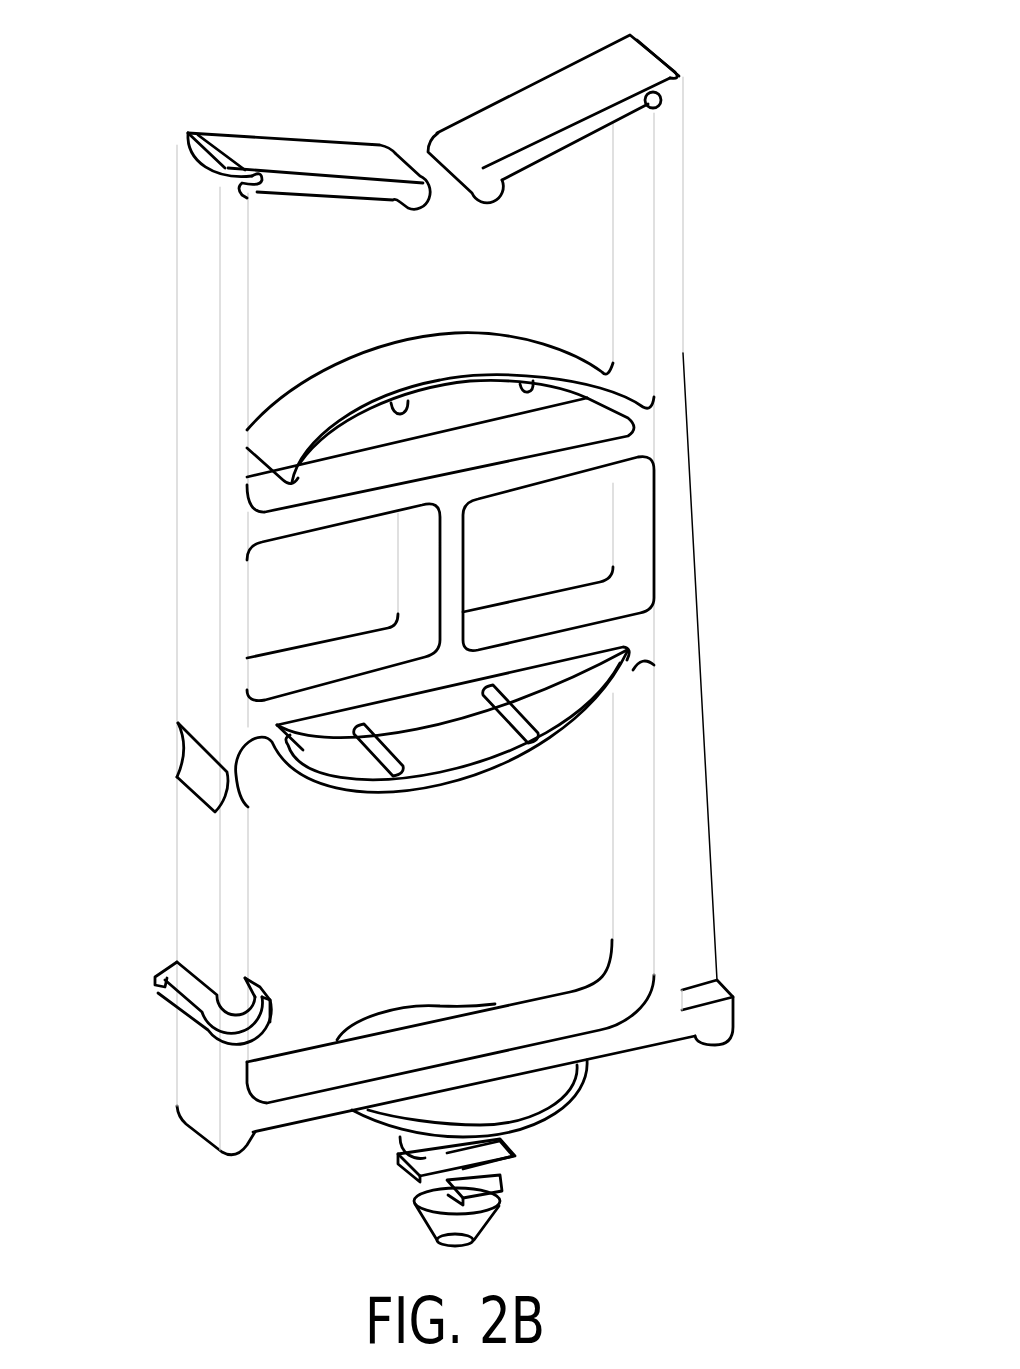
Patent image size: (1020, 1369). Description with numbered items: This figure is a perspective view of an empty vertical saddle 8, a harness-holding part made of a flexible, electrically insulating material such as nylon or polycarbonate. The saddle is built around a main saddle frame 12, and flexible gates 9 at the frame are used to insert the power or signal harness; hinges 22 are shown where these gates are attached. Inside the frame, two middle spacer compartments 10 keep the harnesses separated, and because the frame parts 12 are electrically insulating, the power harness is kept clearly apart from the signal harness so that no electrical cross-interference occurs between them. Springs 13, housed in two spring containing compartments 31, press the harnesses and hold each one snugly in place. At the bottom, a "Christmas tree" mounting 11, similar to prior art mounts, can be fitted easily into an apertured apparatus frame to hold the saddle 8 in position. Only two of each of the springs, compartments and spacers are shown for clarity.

The vertical saddle 8 is at (724, 148).
The flexible gates 9 is at (413, 143).
The middle spacer compartments 10 is at (597, 523).
The mounting 11 is at (487, 1186).
The main saddle frame 12 is at (192, 338).
The springs 13 is at (449, 358).
The hinges 22 is at (187, 135).
The spring containing compartments 31 is at (592, 230).